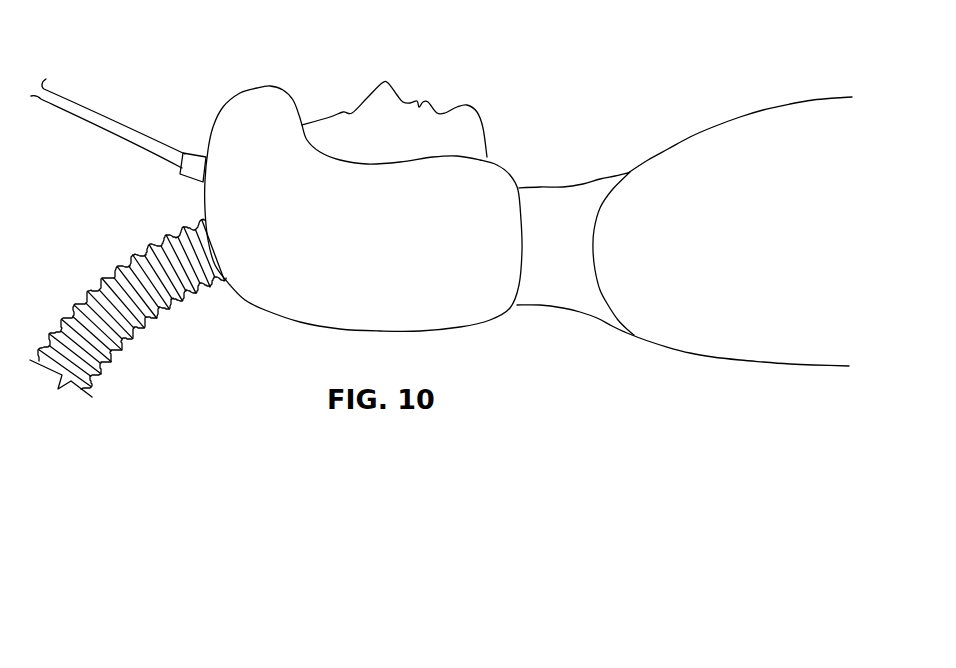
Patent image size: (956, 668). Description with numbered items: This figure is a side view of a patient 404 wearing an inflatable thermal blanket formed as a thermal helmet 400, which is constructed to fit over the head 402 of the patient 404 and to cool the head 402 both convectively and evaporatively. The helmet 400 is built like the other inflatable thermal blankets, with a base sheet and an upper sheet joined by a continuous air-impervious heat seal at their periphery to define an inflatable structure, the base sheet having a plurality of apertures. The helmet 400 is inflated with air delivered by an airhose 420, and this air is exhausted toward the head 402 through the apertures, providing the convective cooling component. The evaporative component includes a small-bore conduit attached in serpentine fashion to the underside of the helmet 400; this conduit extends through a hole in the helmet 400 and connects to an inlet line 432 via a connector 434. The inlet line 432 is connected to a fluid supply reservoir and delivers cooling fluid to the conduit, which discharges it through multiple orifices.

The thermal helmet 400 is at (235, 75).
The head 402 is at (335, 127).
The patient 404 is at (546, 136).
The airhose 420 is at (172, 300).
The inlet line 432 is at (110, 142).
The connector 434 is at (192, 178).